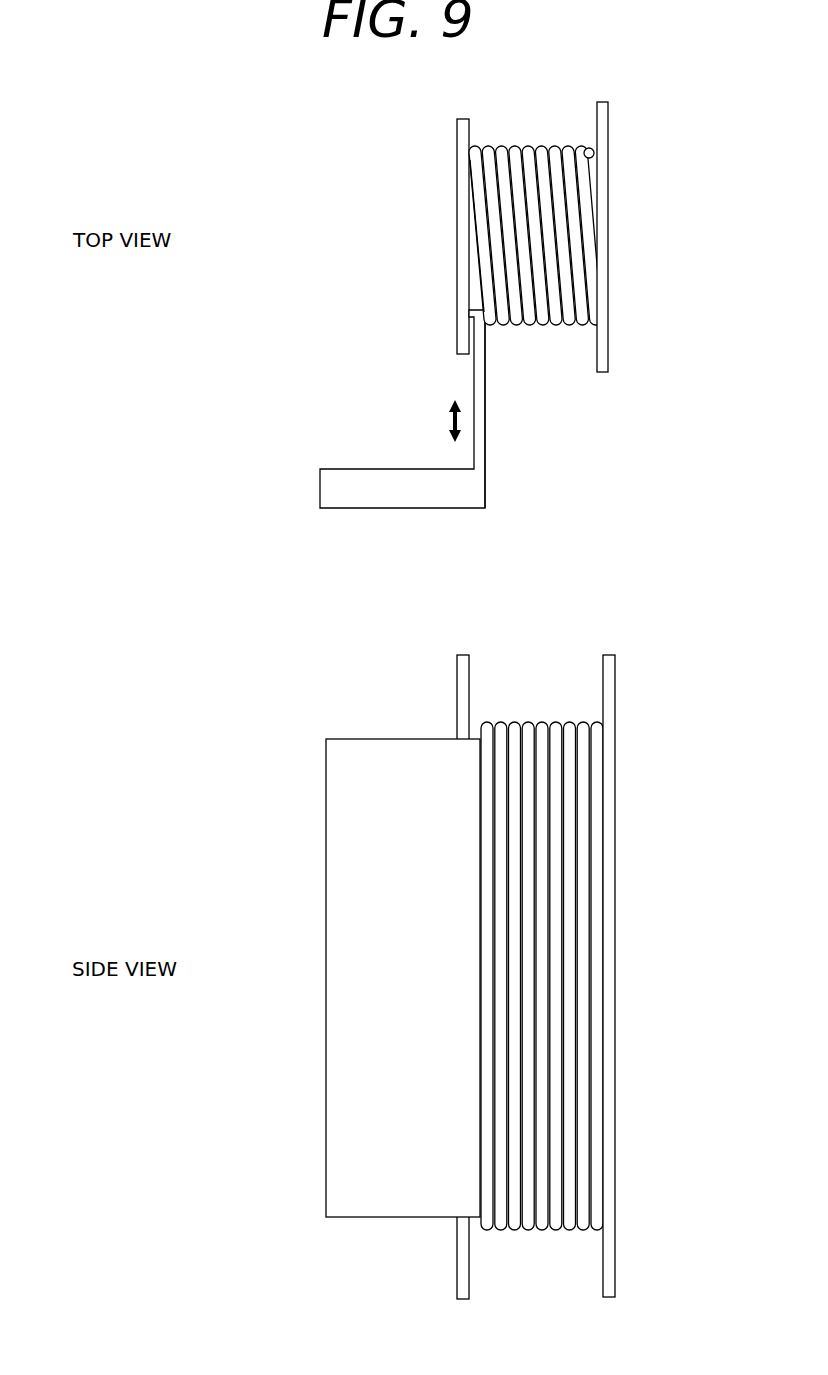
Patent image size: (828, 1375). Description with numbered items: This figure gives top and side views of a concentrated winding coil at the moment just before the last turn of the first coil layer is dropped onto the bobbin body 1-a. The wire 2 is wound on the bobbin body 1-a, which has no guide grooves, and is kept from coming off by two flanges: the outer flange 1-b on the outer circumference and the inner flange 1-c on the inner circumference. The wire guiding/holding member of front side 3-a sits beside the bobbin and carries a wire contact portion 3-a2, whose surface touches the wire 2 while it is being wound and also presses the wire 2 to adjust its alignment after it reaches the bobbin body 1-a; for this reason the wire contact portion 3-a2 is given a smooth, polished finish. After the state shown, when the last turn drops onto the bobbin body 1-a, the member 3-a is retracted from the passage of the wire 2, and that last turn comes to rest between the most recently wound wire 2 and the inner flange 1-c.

The bobbin body 1-a is at (477, 268).
The outer flange 1-b is at (602, 129).
The inner flange 1-c is at (464, 130).
The wire 2 is at (573, 303).
The wire guiding/holding member of front side 3-a is at (347, 482).
The wire contact portion 3-a2 is at (483, 487).